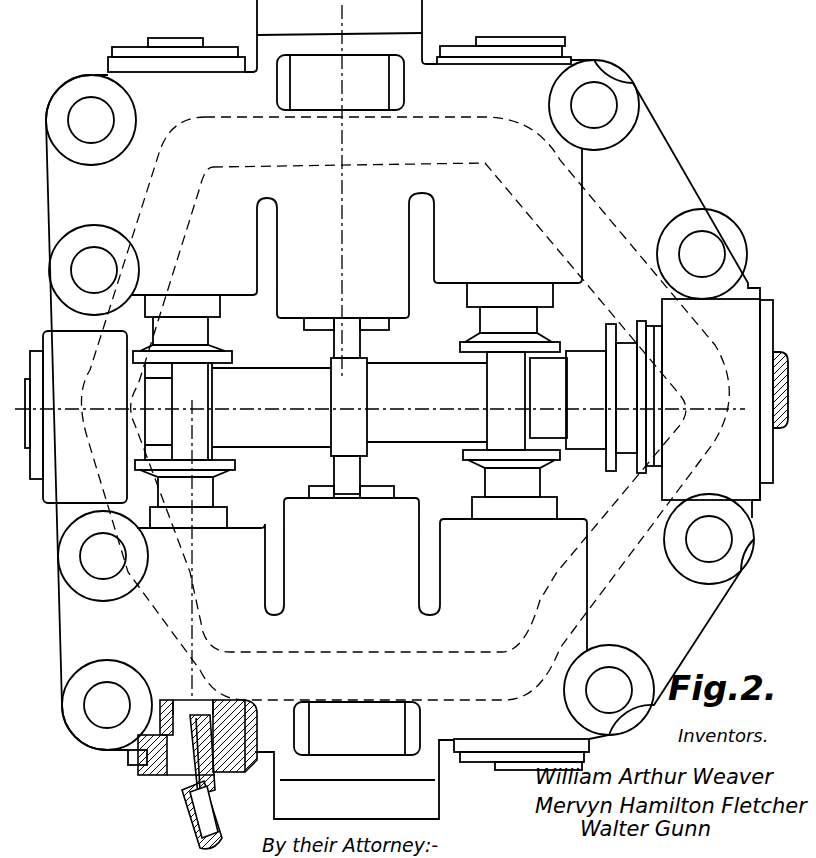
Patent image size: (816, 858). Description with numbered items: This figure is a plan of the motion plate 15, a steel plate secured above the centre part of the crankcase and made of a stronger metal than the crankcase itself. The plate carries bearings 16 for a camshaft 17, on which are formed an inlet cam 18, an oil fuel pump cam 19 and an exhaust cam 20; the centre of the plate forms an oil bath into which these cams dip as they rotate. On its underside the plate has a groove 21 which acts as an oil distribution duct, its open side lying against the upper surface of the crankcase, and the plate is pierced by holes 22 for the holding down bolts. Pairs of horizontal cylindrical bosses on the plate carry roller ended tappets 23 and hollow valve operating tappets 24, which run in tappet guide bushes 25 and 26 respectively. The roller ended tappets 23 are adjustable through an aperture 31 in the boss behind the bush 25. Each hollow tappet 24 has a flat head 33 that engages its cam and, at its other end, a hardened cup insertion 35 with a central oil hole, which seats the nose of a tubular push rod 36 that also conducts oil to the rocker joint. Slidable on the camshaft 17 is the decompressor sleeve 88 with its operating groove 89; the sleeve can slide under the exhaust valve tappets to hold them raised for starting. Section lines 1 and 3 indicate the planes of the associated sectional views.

The section line 1- 1 is at (345, 15).
The section line 3- 3 is at (15, 410).
The motion plate 15 is at (668, 124).
The bearings 16 is at (70, 481).
The camshaft 17 is at (286, 385).
The inlet cam 18 is at (197, 423).
The oil fuel pump cam 19 is at (358, 414).
The exhaust cam 20 is at (505, 381).
The groove 21 is at (373, 166).
The holes 22 is at (603, 95).
The roller ended tappets 23 is at (363, 347).
The hollow valve operating tappets 24 is at (208, 334).
The tappet guide bushes 25 is at (320, 334).
The tappet guide bushes 26 is at (116, 55).
The aperture 31 is at (385, 93).
The flat head 33 is at (222, 457).
The hardened cup insertion 35 is at (170, 778).
The push rod 36 is at (190, 847).
The sleeve 88 is at (589, 347).
The operating groove 89 is at (636, 383).